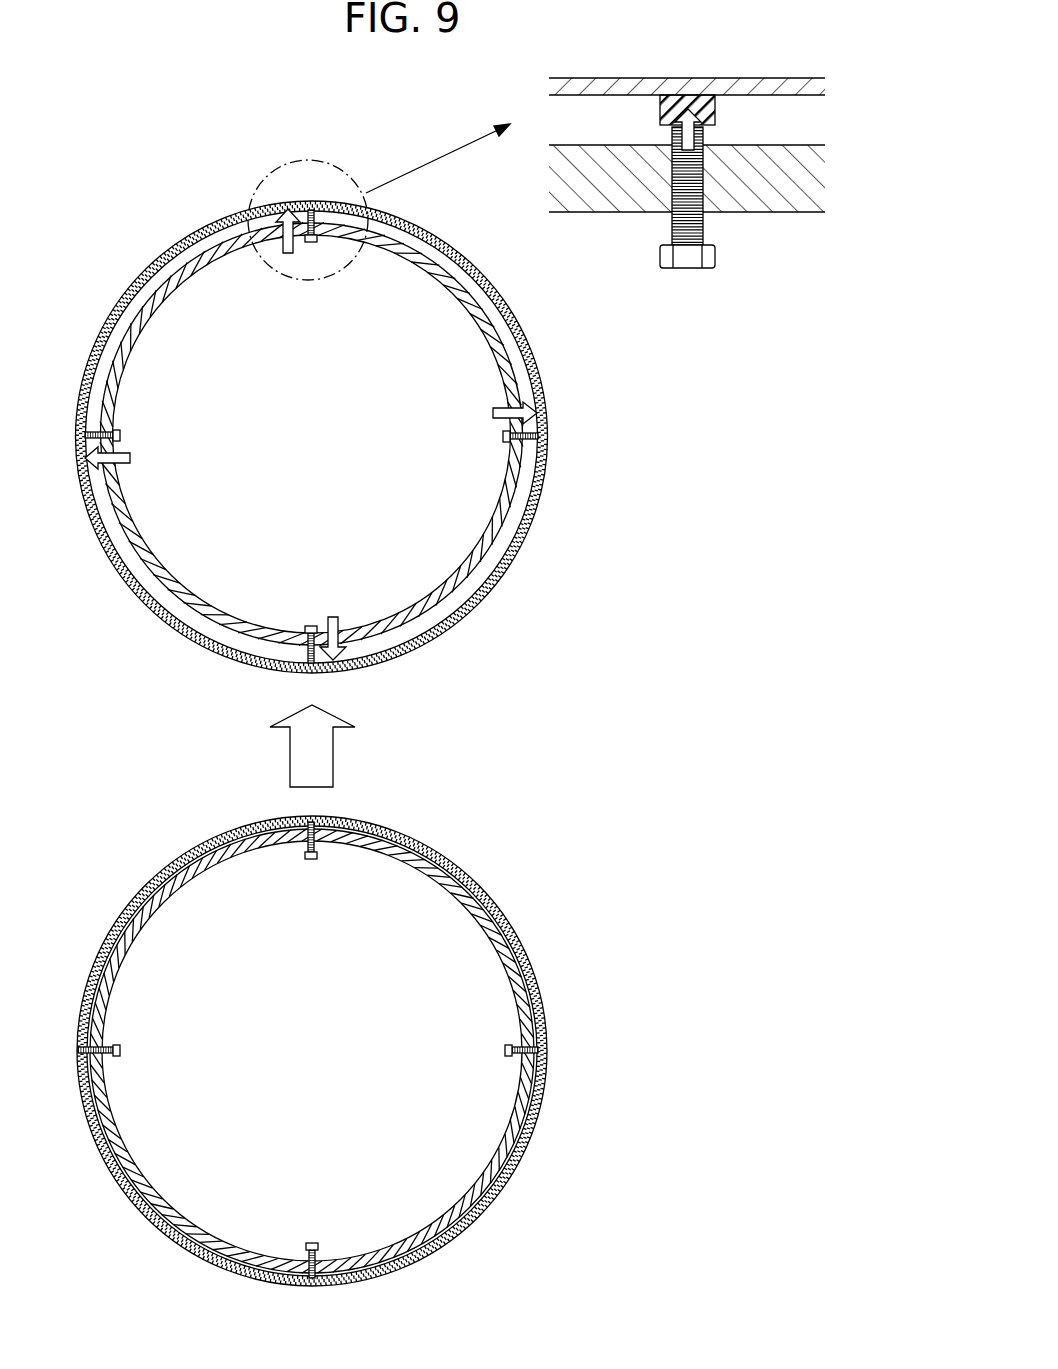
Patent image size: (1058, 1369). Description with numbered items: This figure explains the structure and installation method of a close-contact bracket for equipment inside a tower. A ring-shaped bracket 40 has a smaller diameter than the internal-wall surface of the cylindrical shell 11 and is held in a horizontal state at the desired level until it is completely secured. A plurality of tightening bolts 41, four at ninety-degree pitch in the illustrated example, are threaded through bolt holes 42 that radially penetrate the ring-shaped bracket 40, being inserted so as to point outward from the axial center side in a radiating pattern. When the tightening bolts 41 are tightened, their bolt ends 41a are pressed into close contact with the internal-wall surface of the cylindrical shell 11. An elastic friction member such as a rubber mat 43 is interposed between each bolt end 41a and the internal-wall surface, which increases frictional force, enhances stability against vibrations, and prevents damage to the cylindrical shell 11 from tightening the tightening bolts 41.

The cylindrical shell 11 is at (538, 355).
The ring-shaped bracket 40 is at (166, 560).
The tightening bolt 41 is at (310, 245).
The bolt end 41a is at (310, 211).
The bolt hole 42 is at (316, 228).
The rubber mat 43 is at (716, 115).